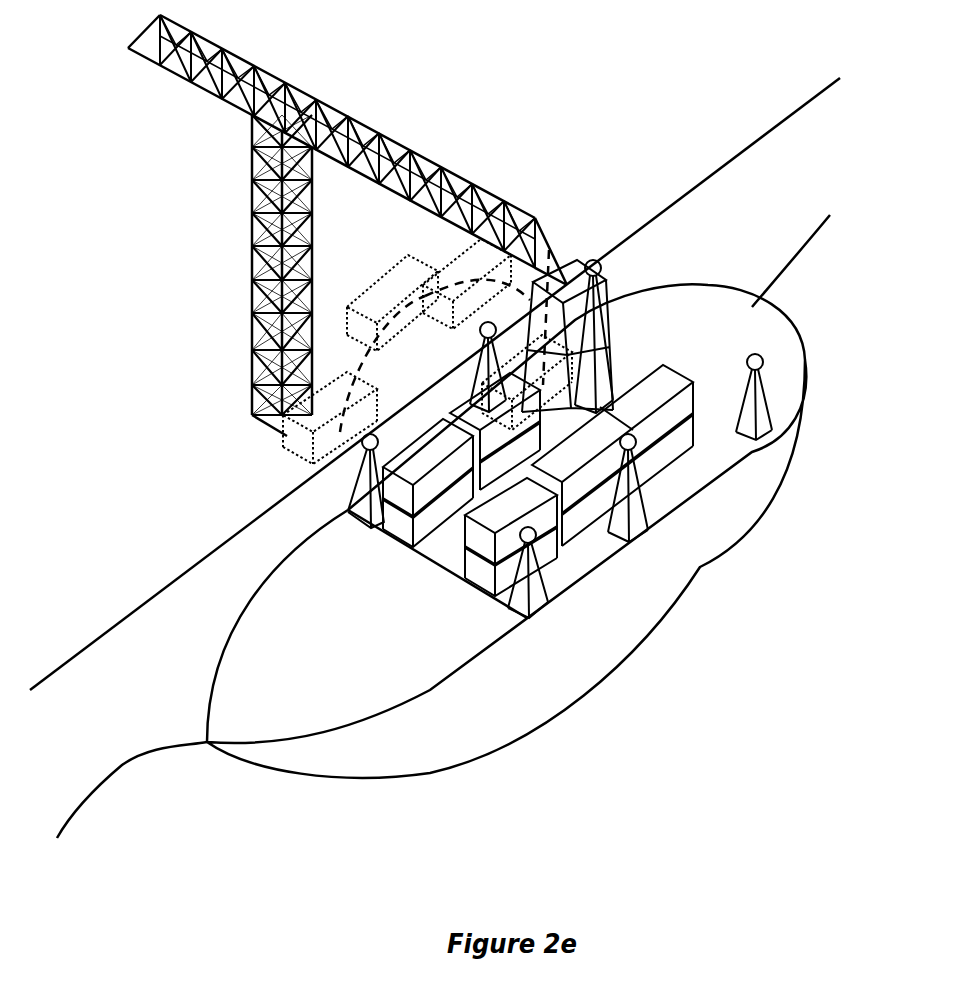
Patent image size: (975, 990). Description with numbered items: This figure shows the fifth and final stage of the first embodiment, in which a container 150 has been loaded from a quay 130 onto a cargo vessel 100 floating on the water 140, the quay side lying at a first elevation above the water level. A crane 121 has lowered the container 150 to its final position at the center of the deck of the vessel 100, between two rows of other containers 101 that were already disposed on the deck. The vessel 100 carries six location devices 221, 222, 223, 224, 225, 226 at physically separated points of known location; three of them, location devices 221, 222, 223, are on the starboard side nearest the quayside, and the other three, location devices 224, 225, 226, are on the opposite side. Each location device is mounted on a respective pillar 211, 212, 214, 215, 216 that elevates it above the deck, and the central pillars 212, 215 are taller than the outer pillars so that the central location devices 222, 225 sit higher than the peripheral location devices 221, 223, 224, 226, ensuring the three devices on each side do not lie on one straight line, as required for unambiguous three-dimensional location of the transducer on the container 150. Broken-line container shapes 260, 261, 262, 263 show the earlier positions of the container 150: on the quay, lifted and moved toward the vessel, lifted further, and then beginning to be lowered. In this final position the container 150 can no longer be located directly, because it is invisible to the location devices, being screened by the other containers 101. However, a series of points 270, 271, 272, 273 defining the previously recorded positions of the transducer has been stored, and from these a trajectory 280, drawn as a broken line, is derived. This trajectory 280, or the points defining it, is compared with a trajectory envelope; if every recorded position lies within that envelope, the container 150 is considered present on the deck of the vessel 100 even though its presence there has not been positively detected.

The cargo vessel 100 is at (797, 460).
The other containers 101 is at (700, 376).
The crane 121 is at (520, 214).
The quay 130 is at (816, 93).
The water 140 is at (817, 230).
The container 150 is at (465, 548).
The pillar 211 is at (610, 290).
The pillar 212 is at (464, 380).
The pillar 214 is at (773, 402).
The pillar 215 is at (650, 510).
The pillar 216 is at (550, 586).
The location device 221 is at (607, 268).
The location device 222 is at (469, 333).
The location device 223 is at (296, 488).
The location device 224 is at (773, 364).
The location device 225 is at (648, 452).
The location device 226 is at (546, 540).
The broken-line container shape 260 is at (289, 434).
The broken-line container shape 261 is at (345, 291).
The broken-line container shape 262 is at (448, 248).
The broken-line container shape 263 is at (472, 402).
The recorded point 270 is at (344, 452).
The recorded point 271 is at (349, 368).
The recorded point 272 is at (508, 270).
The recorded point 273 is at (556, 381).
The trajectory 280 is at (252, 392).